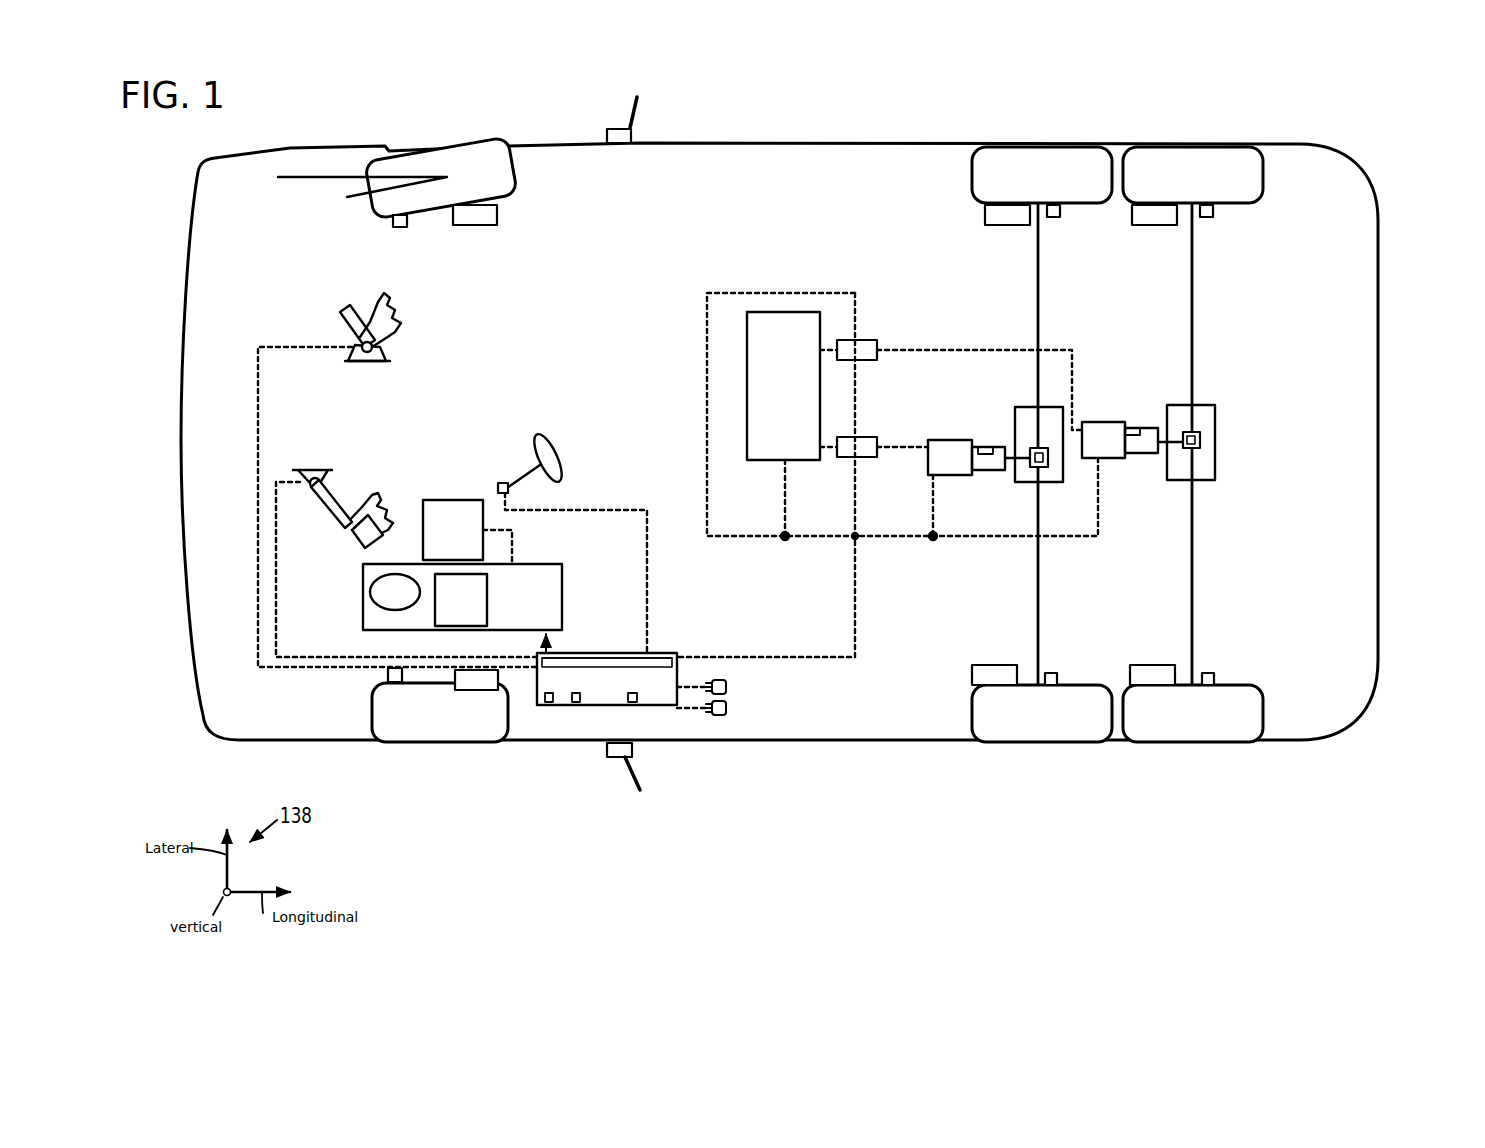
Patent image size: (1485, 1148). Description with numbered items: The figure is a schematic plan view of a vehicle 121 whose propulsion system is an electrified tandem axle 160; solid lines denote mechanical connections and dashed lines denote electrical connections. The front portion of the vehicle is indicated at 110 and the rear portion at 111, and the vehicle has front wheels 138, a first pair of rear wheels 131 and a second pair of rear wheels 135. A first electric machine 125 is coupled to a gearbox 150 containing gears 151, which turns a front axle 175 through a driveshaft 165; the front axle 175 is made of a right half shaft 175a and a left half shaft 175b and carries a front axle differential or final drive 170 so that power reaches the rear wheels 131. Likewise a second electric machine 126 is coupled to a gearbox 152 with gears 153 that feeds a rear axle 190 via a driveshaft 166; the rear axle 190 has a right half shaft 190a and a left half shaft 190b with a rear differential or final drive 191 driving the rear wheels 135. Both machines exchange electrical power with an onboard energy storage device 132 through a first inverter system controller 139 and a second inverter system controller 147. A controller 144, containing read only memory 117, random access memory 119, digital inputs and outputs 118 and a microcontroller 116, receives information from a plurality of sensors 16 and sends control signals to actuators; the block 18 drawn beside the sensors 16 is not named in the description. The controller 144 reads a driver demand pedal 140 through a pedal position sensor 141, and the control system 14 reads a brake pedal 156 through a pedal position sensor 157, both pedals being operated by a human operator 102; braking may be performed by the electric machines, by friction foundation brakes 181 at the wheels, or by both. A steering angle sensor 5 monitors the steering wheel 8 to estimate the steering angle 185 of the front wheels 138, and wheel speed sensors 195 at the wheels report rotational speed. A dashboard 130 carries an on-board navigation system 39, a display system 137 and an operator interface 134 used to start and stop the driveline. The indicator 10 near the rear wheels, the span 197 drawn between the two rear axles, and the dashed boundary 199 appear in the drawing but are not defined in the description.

The steering angle sensor 5 is at (498, 485).
The steering wheel 8 is at (538, 448).
The vehicle 10 is at (977, 143).
The control system 14 is at (690, 623).
The sensors 16 is at (717, 683).
The connector 18 is at (717, 705).
The on-board navigation system 39 is at (467, 532).
The human operator 102 is at (397, 310).
The front portion 110 is at (135, 240).
The rear portion 111 is at (1432, 180).
The microcontroller 116 is at (632, 702).
The non-transitory memory 117 is at (549, 702).
The digital inputs/outputs 118 is at (658, 667).
The random access memory 119 is at (576, 702).
The vehicle 121 is at (762, 143).
The first electric machine 125 is at (937, 460).
The second electric machine 126 is at (1118, 448).
The dashboard 130 is at (563, 567).
The first pair of rear wheels 131 is at (1037, 163).
The onboard electrical energy storage device 132 is at (792, 386).
The operator interface 134 is at (461, 600).
The second pair of rear wheels 135 is at (1183, 157).
The display system 137 is at (395, 592).
The front wheels 138 is at (505, 152).
The first inverter system controller 139 is at (857, 350).
The driver demand pedal 140 is at (350, 322).
The driver demand pedal position sensor 141 is at (375, 348).
The controller 144 is at (607, 669).
The second inverter system controller 147 is at (857, 447).
The gearbox 150 is at (993, 470).
The gears 151 is at (985, 447).
The gearbox 152 is at (1143, 447).
The gears 153 is at (1137, 427).
The brake pedal 156 is at (338, 535).
The pedal position sensor 157 is at (305, 483).
The electrified tandem axle 160 is at (980, 272).
The driveshaft 165 is at (1012, 447).
The driveshaft 166 is at (1165, 427).
The front axle differential gear set 170 is at (1047, 470).
The front axle 175 is at (1020, 397).
The right half shaft 175a is at (1040, 340).
The left half shaft 175b is at (1038, 598).
The friction foundation brakes 181 is at (815, 447).
The steering angle 185 is at (345, 190).
The rear axle 190 is at (1217, 490).
The right half shaft 190a is at (1192, 338).
The left half shaft 190b is at (1192, 598).
The rear axle differential gear set 191 is at (1203, 438).
The wheel speed sensors 195 is at (400, 227).
The track width 197 is at (1282, 200).
The cabin boundary 199 is at (820, 657).